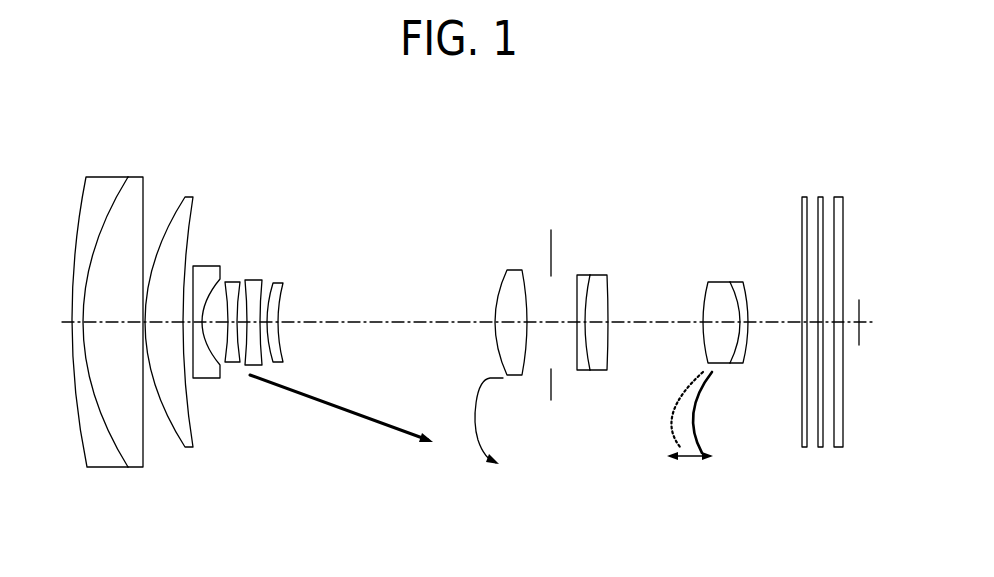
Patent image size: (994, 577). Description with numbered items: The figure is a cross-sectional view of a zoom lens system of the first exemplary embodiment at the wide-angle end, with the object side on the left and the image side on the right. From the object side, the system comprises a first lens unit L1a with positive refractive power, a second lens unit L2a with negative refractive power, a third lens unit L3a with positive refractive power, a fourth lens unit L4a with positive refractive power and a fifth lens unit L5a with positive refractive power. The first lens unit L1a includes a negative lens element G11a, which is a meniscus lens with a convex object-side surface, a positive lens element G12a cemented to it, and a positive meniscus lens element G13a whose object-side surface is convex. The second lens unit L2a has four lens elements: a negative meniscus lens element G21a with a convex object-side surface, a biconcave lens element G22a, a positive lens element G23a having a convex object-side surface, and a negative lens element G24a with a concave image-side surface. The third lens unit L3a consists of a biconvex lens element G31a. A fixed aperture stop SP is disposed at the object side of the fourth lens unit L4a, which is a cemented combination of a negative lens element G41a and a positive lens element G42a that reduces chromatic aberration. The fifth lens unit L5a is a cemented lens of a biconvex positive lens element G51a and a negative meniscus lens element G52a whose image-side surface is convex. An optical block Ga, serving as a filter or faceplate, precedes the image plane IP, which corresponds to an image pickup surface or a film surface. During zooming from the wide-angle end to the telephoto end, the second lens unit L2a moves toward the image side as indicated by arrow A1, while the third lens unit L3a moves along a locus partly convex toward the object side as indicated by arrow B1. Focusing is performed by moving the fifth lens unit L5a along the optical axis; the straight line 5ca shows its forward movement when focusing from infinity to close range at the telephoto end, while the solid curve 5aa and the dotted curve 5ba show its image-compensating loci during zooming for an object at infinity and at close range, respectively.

The first lens unit L1a is at (200, 193).
The second lens unit L2a is at (290, 280).
The third lens unit L3a is at (528, 270).
The fourth lens unit L4a is at (603, 270).
The fifth lens unit L5a is at (753, 283).
The lens element G11a is at (95, 469).
The lens element G12a is at (137, 469).
The lens element G13a is at (192, 449).
The lens element G21a is at (207, 380).
The lens element G22a is at (235, 367).
The lens element G23a is at (252, 368).
The lens element G24a is at (281, 302).
The biconvex lens element G31a is at (513, 380).
The negative lens element G41a is at (582, 372).
The positive lens element G42a is at (605, 290).
The lens element G51a is at (705, 302).
The lens element G52a is at (750, 295).
The aperture stop SP is at (552, 240).
The optical block Ga is at (850, 213).
The image plane IP is at (860, 315).
The arrow A1 is at (341, 428).
The arrow B1 is at (471, 421).
The solid curve 5aa is at (703, 435).
The dotted curve 5ba is at (672, 430).
The straight line 5ca is at (690, 462).